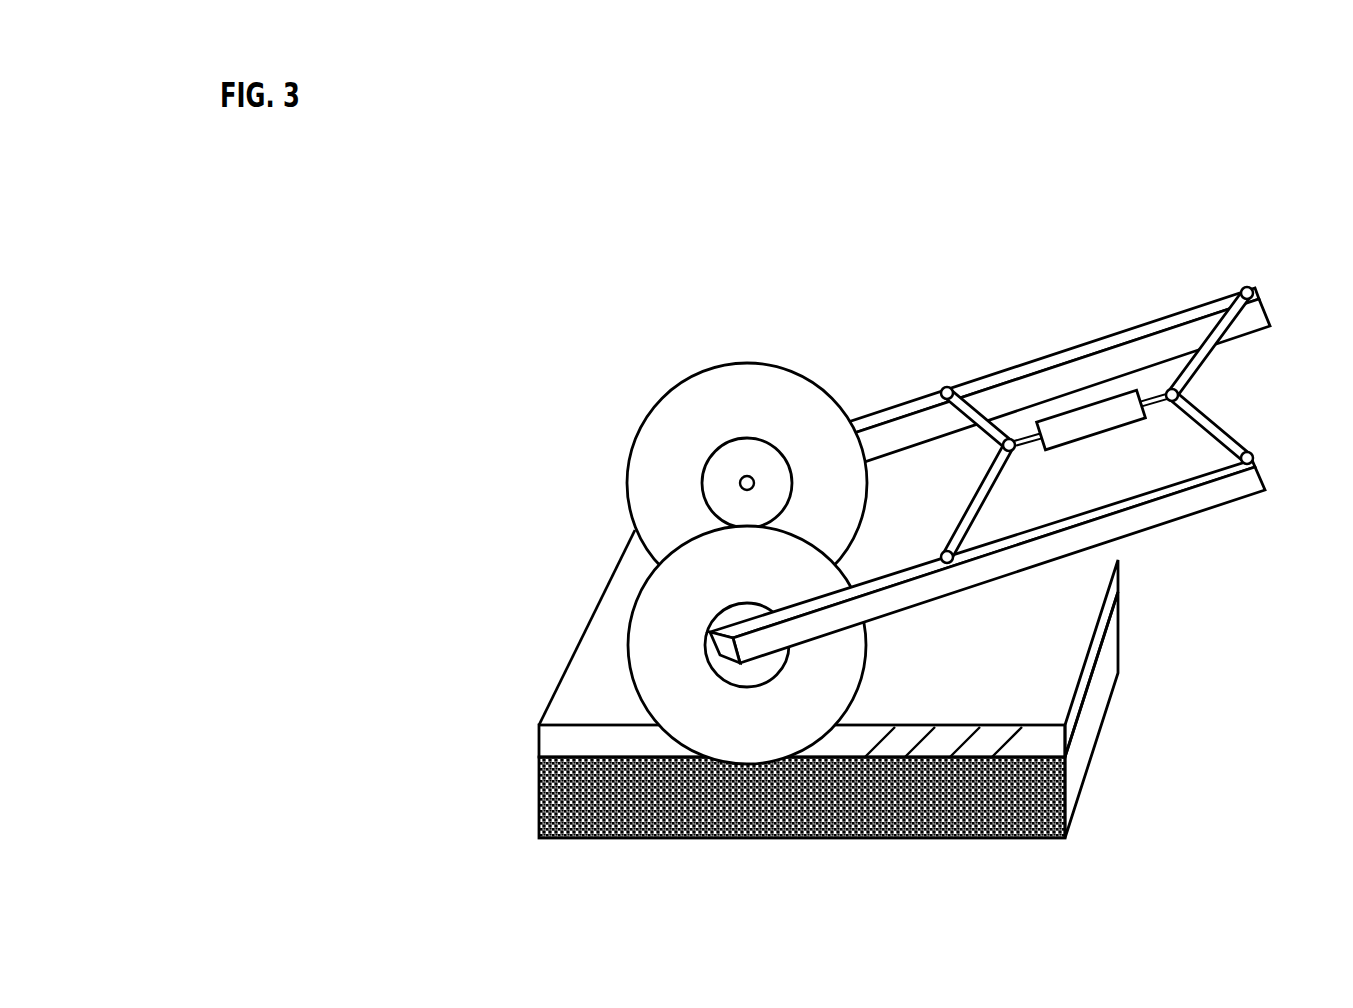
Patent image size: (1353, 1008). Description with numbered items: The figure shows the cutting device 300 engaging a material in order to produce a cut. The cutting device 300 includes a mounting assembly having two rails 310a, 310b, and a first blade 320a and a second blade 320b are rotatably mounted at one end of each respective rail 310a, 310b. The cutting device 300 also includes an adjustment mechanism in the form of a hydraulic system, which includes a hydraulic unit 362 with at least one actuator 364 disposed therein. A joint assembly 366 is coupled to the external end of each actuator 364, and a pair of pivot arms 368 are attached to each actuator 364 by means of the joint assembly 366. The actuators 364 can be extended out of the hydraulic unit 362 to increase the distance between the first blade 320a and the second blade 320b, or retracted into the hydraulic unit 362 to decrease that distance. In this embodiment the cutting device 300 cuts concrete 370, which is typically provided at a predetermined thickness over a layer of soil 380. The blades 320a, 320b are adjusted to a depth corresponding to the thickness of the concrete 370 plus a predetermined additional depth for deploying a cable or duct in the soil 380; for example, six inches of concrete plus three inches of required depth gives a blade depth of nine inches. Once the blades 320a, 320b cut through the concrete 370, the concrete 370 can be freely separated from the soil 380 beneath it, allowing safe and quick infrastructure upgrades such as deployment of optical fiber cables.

The cutting device 300 is at (757, 197).
The rail 310a is at (1193, 508).
The rail 310b is at (1266, 314).
The first blade 320a is at (631, 613).
The second blade 320b is at (677, 386).
The hydraulic unit 362 is at (1102, 425).
The actuator 364 is at (1019, 428).
The joint assembly 366 is at (1012, 453).
The pivot arm 368 is at (977, 428).
The concrete 370 is at (540, 743).
The soil 380 is at (540, 807).